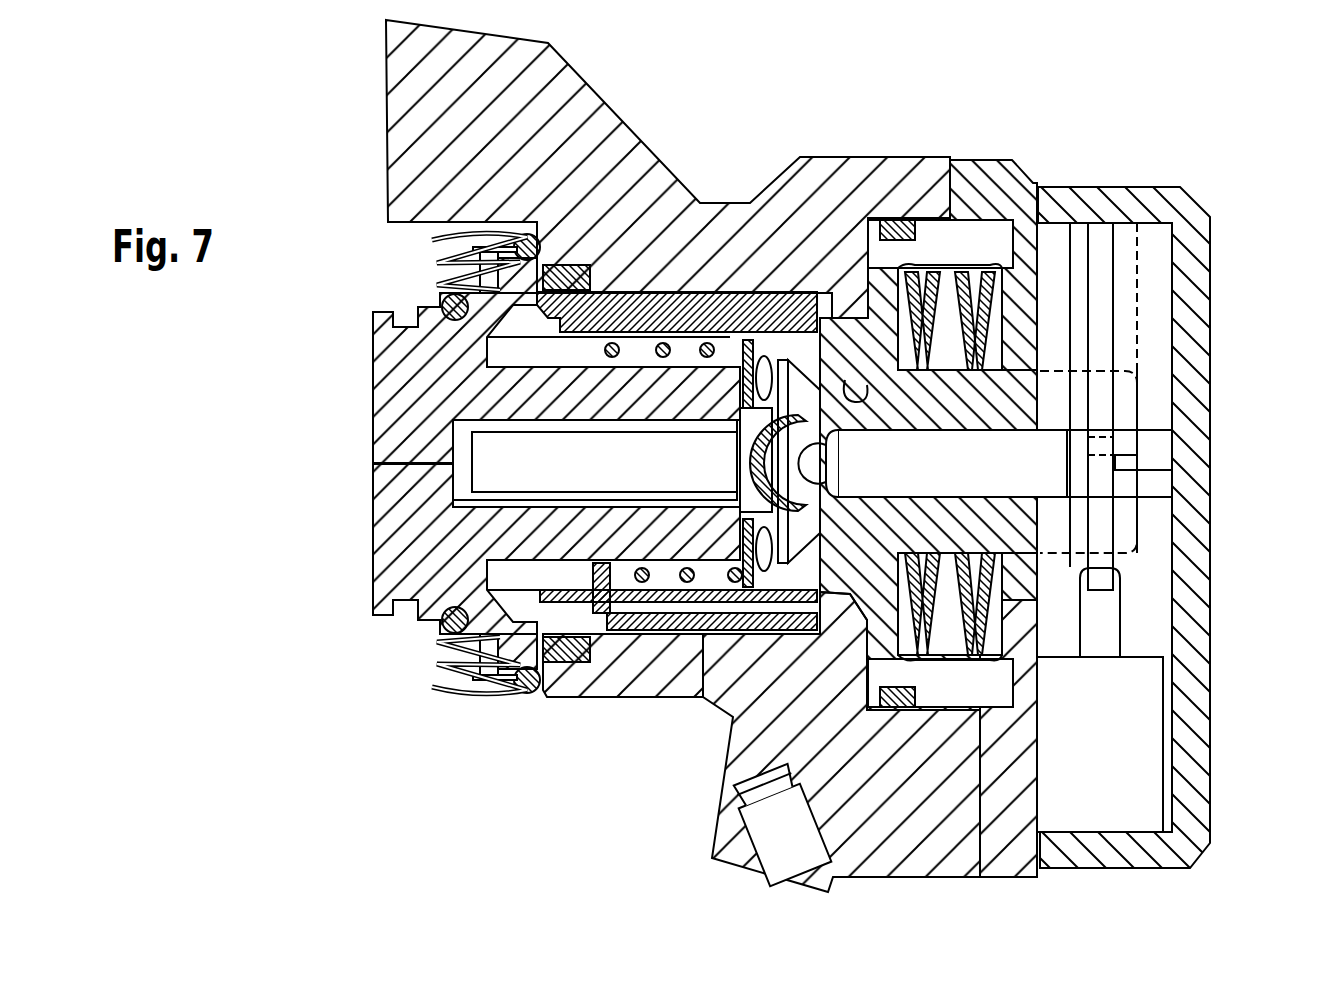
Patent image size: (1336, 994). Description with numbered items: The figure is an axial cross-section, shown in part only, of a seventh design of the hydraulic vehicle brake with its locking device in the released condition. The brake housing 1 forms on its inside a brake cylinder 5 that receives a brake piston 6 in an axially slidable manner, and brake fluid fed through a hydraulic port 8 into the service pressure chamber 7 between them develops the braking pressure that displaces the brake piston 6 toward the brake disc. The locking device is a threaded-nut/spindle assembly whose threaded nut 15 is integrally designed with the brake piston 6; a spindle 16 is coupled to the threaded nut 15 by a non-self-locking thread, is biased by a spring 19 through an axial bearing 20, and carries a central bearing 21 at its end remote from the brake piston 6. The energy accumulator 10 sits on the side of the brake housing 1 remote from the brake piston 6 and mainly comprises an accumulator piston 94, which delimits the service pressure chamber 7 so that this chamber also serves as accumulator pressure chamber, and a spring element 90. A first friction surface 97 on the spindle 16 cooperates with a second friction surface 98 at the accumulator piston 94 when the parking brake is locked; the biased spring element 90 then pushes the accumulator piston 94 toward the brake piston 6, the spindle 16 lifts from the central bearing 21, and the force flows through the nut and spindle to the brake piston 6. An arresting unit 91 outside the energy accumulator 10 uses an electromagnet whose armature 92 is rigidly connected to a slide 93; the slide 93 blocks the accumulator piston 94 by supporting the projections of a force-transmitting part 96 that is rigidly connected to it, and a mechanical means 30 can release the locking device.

The brake housing 1 is at (577, 107).
The brake cylinder 5 is at (568, 683).
The brake piston 6 is at (427, 557).
The service pressure chamber 7 is at (488, 640).
The hydraulic port 8 is at (770, 855).
The energy accumulator 10 is at (943, 277).
The threaded nut 15 is at (627, 380).
The spindle 16 is at (670, 443).
The spring 19 is at (640, 583).
The axial bearing 20 is at (708, 665).
The central bearing 21 is at (790, 468).
The mechanical means 30 is at (1152, 443).
The spring element 90 is at (988, 283).
The arresting unit 91 is at (1153, 733).
The armature 92 is at (1105, 625).
The slide 93 is at (1100, 322).
The accumulator piston 94 is at (1015, 407).
The force-transmitting part 96 is at (1123, 482).
The first friction surface 97 is at (803, 345).
The second friction surface 98 is at (868, 390).